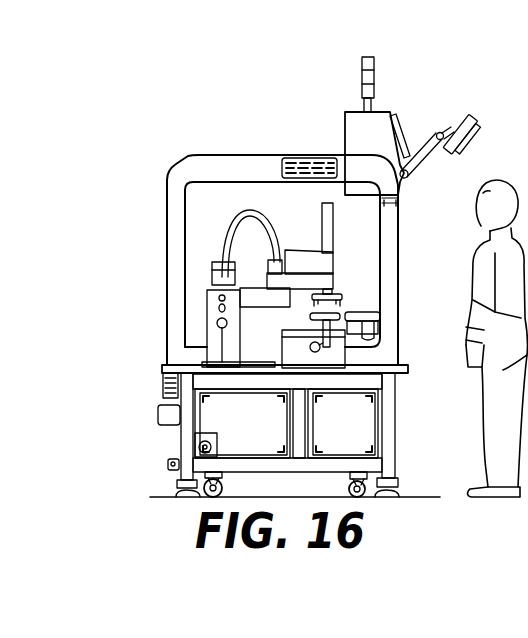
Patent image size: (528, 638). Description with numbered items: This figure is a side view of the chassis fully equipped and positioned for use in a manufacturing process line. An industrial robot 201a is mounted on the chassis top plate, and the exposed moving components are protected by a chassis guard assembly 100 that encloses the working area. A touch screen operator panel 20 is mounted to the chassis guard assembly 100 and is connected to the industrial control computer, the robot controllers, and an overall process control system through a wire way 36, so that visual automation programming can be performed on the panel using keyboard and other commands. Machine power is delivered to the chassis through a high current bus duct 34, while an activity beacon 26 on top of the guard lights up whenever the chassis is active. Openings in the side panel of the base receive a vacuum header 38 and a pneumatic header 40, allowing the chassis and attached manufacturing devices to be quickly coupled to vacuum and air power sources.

The chassis guard assembly 100 is at (212, 136).
The activity beacon 26 is at (375, 68).
The touch screen operator panel 20 is at (458, 122).
The industrial robot 201a is at (267, 262).
The high current bus duct 34 is at (165, 380).
The wire way 36 is at (158, 415).
The vacuum header 38 is at (196, 444).
The pneumatic header 40 is at (168, 465).